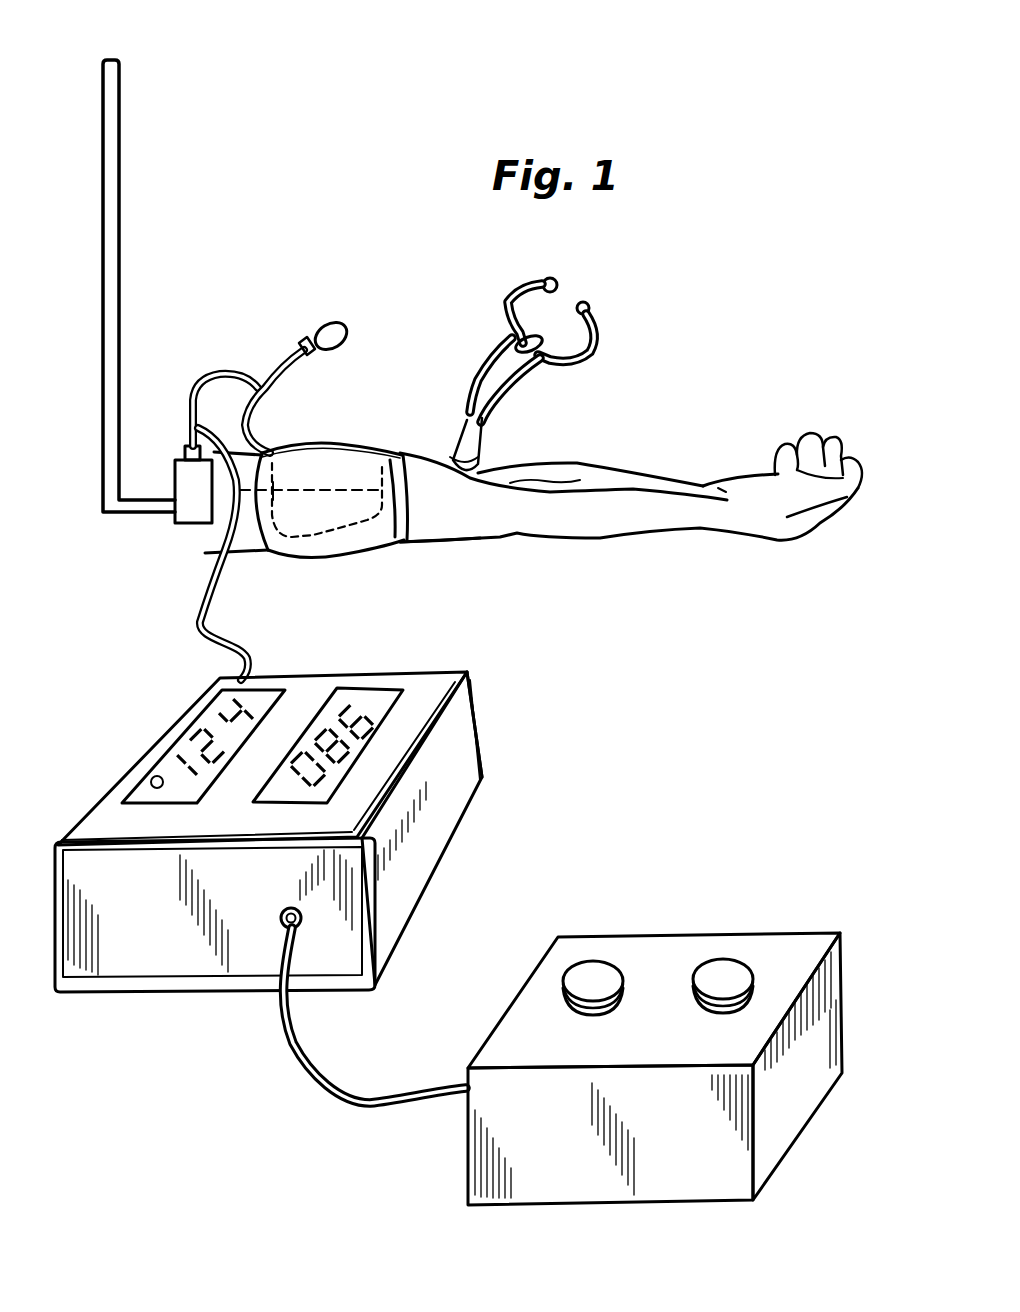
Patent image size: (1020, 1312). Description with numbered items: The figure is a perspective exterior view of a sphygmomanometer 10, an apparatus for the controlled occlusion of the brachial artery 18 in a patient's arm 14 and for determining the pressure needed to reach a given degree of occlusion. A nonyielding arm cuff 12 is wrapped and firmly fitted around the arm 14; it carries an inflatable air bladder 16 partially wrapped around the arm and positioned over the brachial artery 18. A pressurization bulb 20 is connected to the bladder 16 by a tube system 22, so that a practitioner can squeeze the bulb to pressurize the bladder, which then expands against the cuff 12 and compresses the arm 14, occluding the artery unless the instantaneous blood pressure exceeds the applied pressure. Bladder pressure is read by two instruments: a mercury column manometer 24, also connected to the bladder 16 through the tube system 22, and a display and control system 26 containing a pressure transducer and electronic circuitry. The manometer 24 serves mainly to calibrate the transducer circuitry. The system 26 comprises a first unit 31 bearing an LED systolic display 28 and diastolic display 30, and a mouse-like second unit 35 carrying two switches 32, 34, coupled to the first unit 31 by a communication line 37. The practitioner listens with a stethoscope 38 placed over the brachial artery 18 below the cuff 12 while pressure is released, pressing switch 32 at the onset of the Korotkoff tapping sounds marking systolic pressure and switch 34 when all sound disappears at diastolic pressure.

The sphygmomanometer 10 is at (190, 627).
The arm cuff 12 is at (374, 450).
The arm 14 is at (703, 483).
The inflatable air bladder 16 is at (308, 538).
The brachial artery 18 is at (422, 513).
The pressurization bulb 20 is at (314, 320).
The tube system 22 is at (272, 362).
The mercury column manometer 24 is at (120, 256).
The display and control system 26 is at (545, 800).
The systolic display 28 is at (230, 697).
The diastolic display 30 is at (372, 700).
The first unit 31 is at (437, 680).
The switch 32 is at (590, 970).
The switch 34 is at (722, 966).
The second unit 35 is at (785, 946).
The communication line 37 is at (312, 1062).
The stethoscope 38 is at (516, 390).